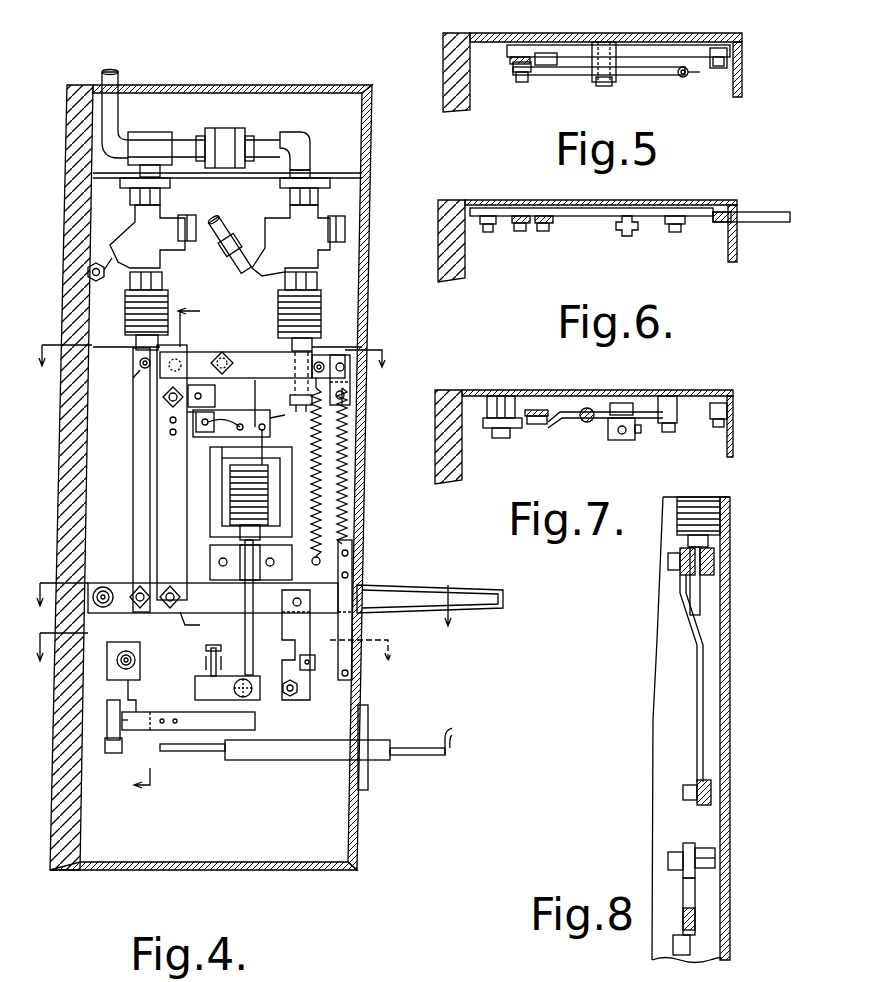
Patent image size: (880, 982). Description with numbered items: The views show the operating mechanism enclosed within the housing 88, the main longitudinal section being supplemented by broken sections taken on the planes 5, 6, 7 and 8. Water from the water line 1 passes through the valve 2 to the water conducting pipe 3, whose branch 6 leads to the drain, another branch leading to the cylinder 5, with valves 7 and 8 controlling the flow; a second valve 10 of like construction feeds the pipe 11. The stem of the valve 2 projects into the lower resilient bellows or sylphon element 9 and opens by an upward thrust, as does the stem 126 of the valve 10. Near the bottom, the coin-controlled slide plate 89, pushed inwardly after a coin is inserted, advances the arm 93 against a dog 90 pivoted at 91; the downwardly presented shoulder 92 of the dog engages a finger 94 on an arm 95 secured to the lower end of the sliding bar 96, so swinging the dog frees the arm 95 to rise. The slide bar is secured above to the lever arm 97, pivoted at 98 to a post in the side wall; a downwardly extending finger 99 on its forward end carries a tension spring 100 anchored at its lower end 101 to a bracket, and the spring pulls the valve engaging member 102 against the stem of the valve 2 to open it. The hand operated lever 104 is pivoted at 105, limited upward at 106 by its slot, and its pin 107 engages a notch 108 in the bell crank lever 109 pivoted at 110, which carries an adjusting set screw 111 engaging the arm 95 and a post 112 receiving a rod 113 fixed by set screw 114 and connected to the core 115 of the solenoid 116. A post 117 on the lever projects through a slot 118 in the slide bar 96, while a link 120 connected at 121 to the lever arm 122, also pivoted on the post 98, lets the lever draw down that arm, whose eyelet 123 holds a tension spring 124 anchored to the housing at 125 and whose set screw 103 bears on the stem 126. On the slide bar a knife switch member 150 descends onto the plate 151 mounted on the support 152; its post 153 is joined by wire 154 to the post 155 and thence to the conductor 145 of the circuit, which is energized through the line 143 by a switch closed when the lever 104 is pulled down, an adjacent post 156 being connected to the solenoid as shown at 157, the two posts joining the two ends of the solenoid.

In FIG. 4, the water line 1 is at (135, 98).
In FIG. 4, the valve 2 is at (170, 258).
In FIG. 4, the water conducting pipe 3 is at (100, 282).
In FIG. 4, the cylinder 5 is at (211, 368).
In FIG. 4, the branch 6 is at (239, 616).
In FIG. 4, the valve 7 is at (211, 661).
In FIG. 4, the valve 8 is at (160, 549).
In FIG. 4, the resilient bellows or sylphon element 9 is at (125, 318).
In FIG. 8, the resilient bellows or sylphon element 9 is at (720, 512).
In FIG. 4, the valve 10 is at (312, 258).
In FIG. 4, the pipe 11 is at (232, 232).
In FIG. 4, the housing 88 is at (118, 862).
In FIG. 6, the housing 88 is at (732, 205).
In FIG. 7, the housing 88 is at (733, 435).
In FIG. 4, the coin-controlled slide plate 89 is at (400, 748).
In FIG. 4, the dog 90 is at (110, 753).
In FIG. 7, the dog 90 is at (488, 428).
In FIG. 8, the dog 90 is at (695, 890).
In FIG. 4, the pivot 91 is at (117, 660).
In FIG. 8, the pivot 91 is at (668, 860).
In FIG. 4, the downwardly presented shoulder 92 is at (107, 712).
In FIG. 4, the arm 93 is at (136, 700).
In FIG. 4, the finger 94 is at (138, 730).
In FIG. 8, the finger 94 is at (695, 920).
In FIG. 4, the arm 95 is at (260, 690).
In FIG. 4, the sliding bar 96 is at (200, 626).
In FIG. 5, the sliding bar 96 is at (570, 47).
In FIG. 6, the sliding bar 96 is at (548, 231).
In FIG. 7, the sliding bar 96 is at (545, 428).
In FIG. 4, the lever arm 97 is at (322, 355).
In FIG. 5, the lever arm 97 is at (722, 70).
In FIG. 8, the lever arm 97 is at (714, 560).
In FIG. 4, the pivot post 98 is at (226, 352).
In FIG. 5, the pivot post 98 is at (604, 86).
In FIG. 4, the downwardly extending finger 99 is at (350, 385).
In FIG. 4, the tension spring 100 is at (347, 460).
In FIG. 4, the lower end of spring 101 is at (348, 552).
In FIG. 4, the valve engaging member 102 is at (140, 360).
In FIG. 5, the valve engaging member 102 is at (683, 78).
In FIG. 4, the set screw 103 is at (290, 400).
In FIG. 4, the hand operated lever 104 is at (470, 608).
In FIG. 6, the hand operated lever 104 is at (765, 222).
In FIG. 8, the hand operated lever 104 is at (711, 792).
In FIG. 4, the pivot 105 is at (103, 586).
In FIG. 6, the pivot 105 is at (488, 232).
In FIG. 4, the slot engagement 106 is at (352, 585).
In FIG. 4, the laterally extending pin 107 is at (293, 604).
In FIG. 4, the notch 108 is at (282, 630).
In FIG. 4, the bell crank lever 109 is at (322, 662).
In FIG. 6, the bell crank lever 109 is at (678, 232).
In FIG. 7, the bell crank lever 109 is at (672, 432).
In FIG. 4, the pivot 110 is at (297, 690).
In FIG. 4, the adjusting set screw 111 is at (201, 661).
In FIG. 7, the adjusting set screw 111 is at (585, 422).
In FIG. 4, the post 112 is at (250, 675).
In FIG. 4, the rod 113 is at (232, 648).
In FIG. 7, the rod 113 is at (620, 440).
In FIG. 4, the set screw 114 is at (250, 696).
In FIG. 4, the core 115 is at (240, 580).
In FIG. 6, the core 115 is at (627, 236).
In FIG. 4, the solenoid 116 is at (230, 500).
In FIG. 4, the post 117 is at (170, 586).
In FIG. 4, the slot 118 is at (140, 608).
In FIG. 4, the link 120 is at (133, 452).
In FIG. 5, the link 120 is at (520, 82).
In FIG. 6, the link 120 is at (520, 231).
In FIG. 8, the link 120 is at (697, 640).
In FIG. 4, the connection 121 is at (133, 378).
In FIG. 4, the lever arm 122 is at (175, 345).
In FIG. 5, the lever arm 122 is at (560, 75).
In FIG. 8, the lever arm 122 is at (680, 572).
In FIG. 4, the eyelet 123 is at (340, 348).
In FIG. 4, the tension spring 124 is at (321, 425).
In FIG. 4, the spring anchorage 125 is at (316, 565).
In FIG. 4, the stem 126 is at (278, 330).
In FIG. 4, the line 143 is at (191, 366).
In FIG. 4, the conductor 145 is at (187, 412).
In FIG. 4, the knife switch member 150 is at (188, 396).
In FIG. 4, the plate 151 is at (222, 458).
In FIG. 4, the support 152 is at (245, 545).
In FIG. 4, the post 153 is at (196, 428).
In FIG. 4, the wire 154 is at (230, 420).
In FIG. 4, the post 155 is at (255, 395).
In FIG. 4, the post 156 is at (265, 430).
In FIG. 4, the solenoid connection 157 is at (295, 408).